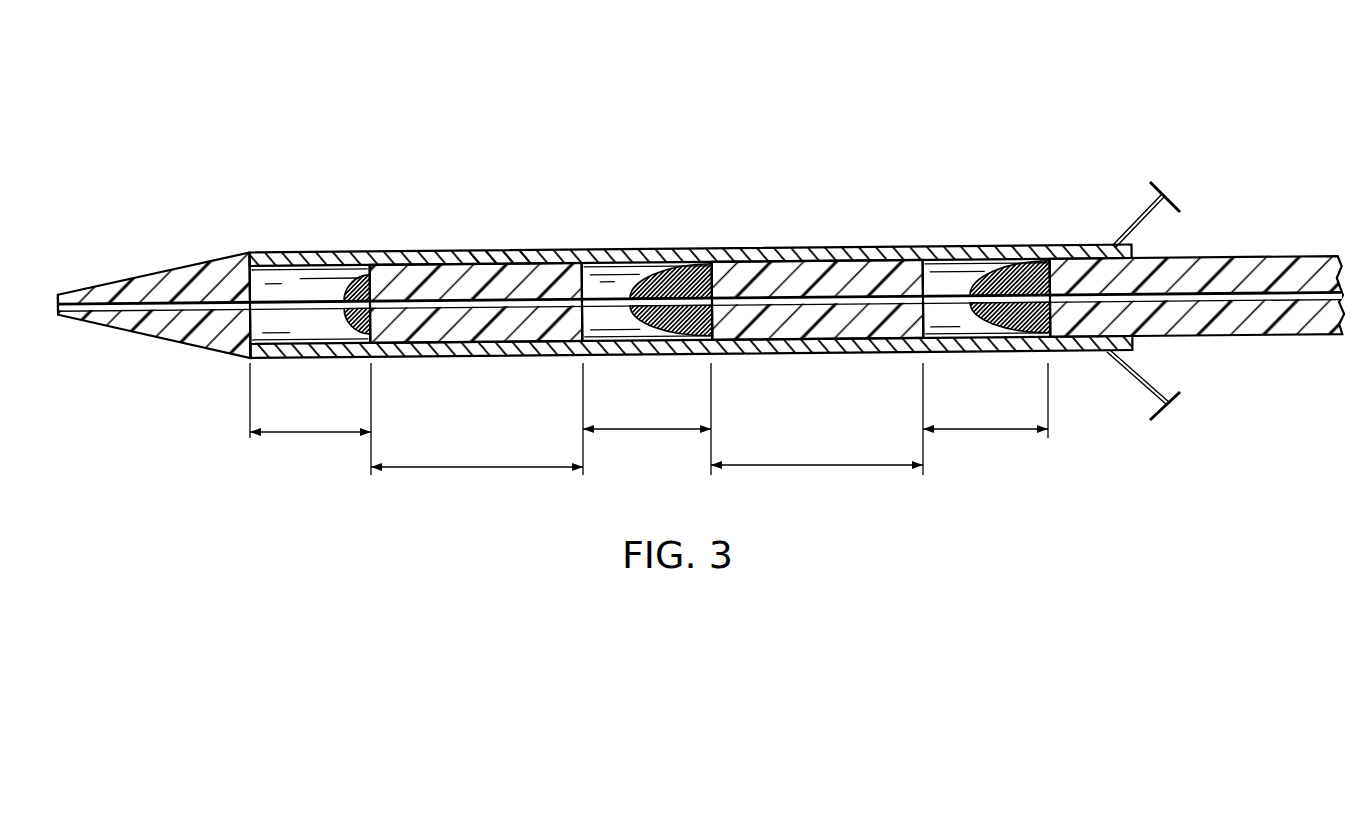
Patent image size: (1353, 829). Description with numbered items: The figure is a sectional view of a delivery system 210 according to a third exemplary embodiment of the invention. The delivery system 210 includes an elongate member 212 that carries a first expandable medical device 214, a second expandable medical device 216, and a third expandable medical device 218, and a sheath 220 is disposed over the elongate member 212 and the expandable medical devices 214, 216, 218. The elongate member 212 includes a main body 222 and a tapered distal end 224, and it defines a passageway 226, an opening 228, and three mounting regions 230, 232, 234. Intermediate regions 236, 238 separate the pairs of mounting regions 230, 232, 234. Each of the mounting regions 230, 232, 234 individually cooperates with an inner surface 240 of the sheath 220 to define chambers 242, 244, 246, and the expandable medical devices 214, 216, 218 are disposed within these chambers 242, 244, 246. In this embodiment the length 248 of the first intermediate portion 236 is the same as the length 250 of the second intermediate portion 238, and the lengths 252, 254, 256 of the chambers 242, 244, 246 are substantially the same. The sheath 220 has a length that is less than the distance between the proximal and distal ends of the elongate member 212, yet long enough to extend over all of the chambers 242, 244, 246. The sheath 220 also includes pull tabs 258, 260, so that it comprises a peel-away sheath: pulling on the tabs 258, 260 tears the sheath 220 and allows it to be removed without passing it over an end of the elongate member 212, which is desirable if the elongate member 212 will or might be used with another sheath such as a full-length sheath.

The delivery system 210 is at (696, 235).
The elongate member 212 is at (856, 266).
The first expandable medical device 214 is at (355, 324).
The second expandable medical device 216 is at (663, 343).
The third expandable medical device 218 is at (998, 345).
The sheath 220 is at (1000, 258).
The main body 222 is at (820, 336).
The tapered distal end 224 is at (157, 326).
The passageway 226 is at (498, 262).
The opening 228 is at (50, 298).
The first mounting region 230 is at (270, 315).
The second mounting region 232 is at (597, 315).
The third mounting region 234 is at (945, 318).
The first intermediate region 236 is at (452, 256).
The second intermediate region 238 is at (757, 266).
The inner surface 240 is at (272, 272).
The first chamber 242 is at (285, 274).
The second chamber 244 is at (620, 272).
The third chamber 246 is at (946, 275).
The length of first intermediate portion 248 is at (461, 467).
The length of second intermediate portion 250 is at (815, 465).
The length of first chamber 252 is at (307, 433).
The length of second chamber 254 is at (647, 430).
The length of third chamber 256 is at (989, 430).
The pull tab 258 is at (1150, 182).
The pull tab 260 is at (1163, 418).